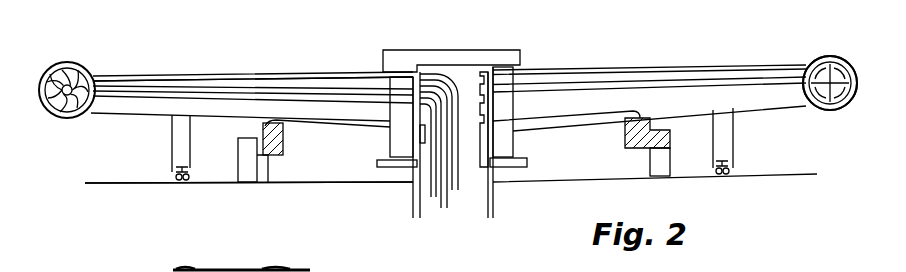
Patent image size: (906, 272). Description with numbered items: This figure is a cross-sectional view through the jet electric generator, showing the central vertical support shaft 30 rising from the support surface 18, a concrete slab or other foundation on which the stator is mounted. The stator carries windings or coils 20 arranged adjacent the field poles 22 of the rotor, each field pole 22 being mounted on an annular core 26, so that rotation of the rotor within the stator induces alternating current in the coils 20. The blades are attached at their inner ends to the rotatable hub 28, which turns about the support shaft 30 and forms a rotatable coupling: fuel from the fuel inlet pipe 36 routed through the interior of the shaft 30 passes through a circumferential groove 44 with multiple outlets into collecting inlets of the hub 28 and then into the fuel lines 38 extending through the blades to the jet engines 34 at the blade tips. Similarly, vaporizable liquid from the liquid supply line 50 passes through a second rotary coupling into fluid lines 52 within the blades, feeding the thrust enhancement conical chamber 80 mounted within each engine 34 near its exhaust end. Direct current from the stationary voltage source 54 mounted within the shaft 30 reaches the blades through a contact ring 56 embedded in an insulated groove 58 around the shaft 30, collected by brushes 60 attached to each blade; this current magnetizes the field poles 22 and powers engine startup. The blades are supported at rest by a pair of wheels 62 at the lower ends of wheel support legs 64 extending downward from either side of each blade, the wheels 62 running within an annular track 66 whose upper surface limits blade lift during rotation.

The support surface 18 is at (307, 200).
The windings or coils 20 is at (250, 157).
The field poles 22 is at (269, 181).
The annular core 26 is at (283, 149).
The rotatable hub 28 is at (513, 147).
The support shaft 30 is at (473, 58).
The jet engines 34 is at (835, 57).
The fuel inlet pipe 36 is at (479, 142).
The fuel lines 38 is at (272, 79).
The circumferential groove 44 is at (422, 76).
The liquid supply line 50 is at (443, 201).
The fluid lines 52 is at (145, 98).
The stationary voltage source 54 is at (429, 188).
The contact ring 56 is at (483, 122).
The insulated groove 58 is at (390, 147).
The brushes 60 is at (423, 134).
The wheels 62 is at (188, 174).
The wheel support legs 64 is at (190, 140).
The annular track 66 is at (840, 74).
The conical chamber 80 is at (837, 108).